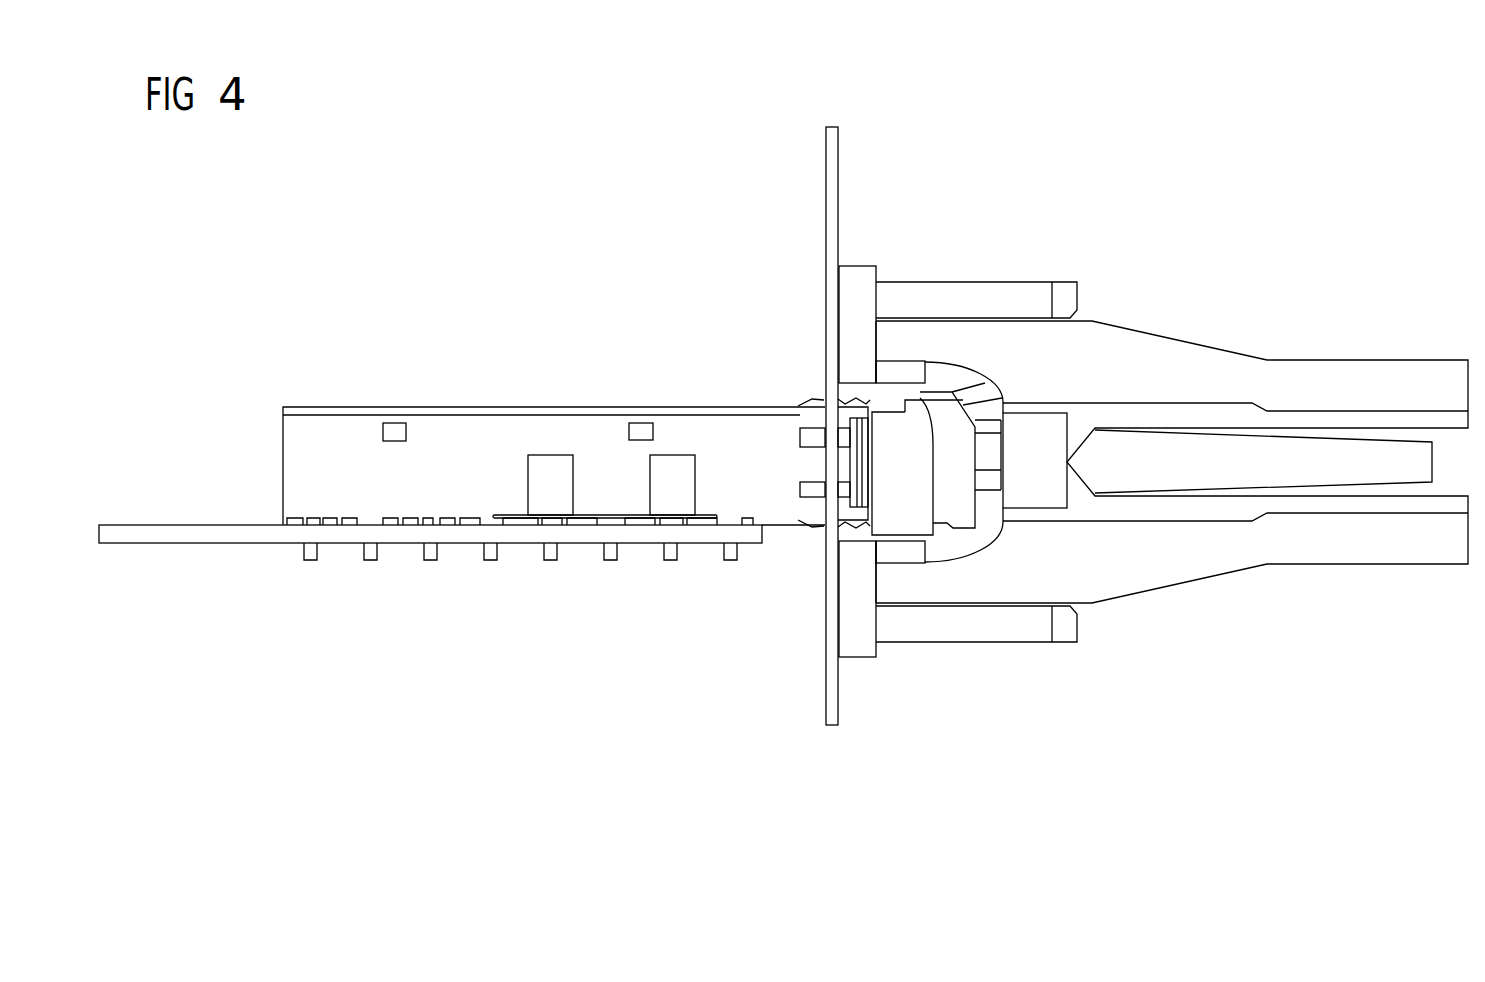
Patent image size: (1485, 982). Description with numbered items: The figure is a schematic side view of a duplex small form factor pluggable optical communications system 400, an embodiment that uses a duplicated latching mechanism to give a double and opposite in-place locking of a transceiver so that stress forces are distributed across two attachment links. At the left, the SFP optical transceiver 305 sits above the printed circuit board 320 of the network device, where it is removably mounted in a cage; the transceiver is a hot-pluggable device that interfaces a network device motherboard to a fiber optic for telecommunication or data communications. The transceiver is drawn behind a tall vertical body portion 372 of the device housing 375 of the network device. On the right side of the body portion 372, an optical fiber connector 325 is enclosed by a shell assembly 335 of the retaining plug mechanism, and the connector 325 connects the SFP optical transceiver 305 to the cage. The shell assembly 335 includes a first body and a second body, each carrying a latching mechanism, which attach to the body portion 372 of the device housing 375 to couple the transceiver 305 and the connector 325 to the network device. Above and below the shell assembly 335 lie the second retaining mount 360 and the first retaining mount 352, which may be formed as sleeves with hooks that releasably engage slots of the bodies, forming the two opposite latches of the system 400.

The duplex small form factor pluggable (SFP) optical communications system 400 is at (875, 459).
The body portion 372 is at (826, 162).
The device housing 375 is at (492, 430).
The printed circuit board 320 is at (179, 525).
The second retaining mount 360 is at (967, 297).
The first retaining mount 352 is at (967, 628).
The shell assembly 335 is at (1395, 327).
The optical fiber connector 325 is at (1190, 476).
The SFP optical transceiver 305 is at (903, 503).